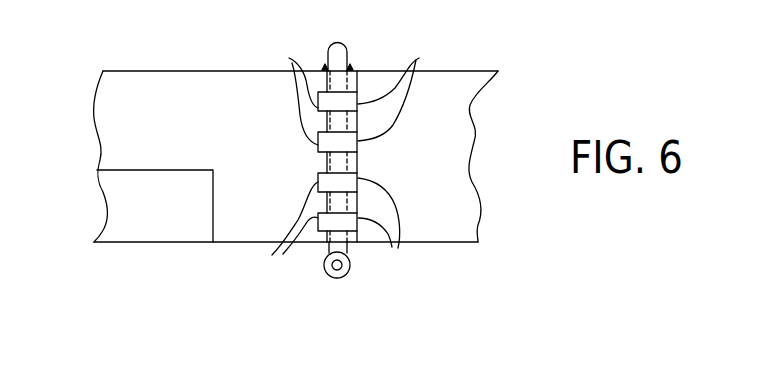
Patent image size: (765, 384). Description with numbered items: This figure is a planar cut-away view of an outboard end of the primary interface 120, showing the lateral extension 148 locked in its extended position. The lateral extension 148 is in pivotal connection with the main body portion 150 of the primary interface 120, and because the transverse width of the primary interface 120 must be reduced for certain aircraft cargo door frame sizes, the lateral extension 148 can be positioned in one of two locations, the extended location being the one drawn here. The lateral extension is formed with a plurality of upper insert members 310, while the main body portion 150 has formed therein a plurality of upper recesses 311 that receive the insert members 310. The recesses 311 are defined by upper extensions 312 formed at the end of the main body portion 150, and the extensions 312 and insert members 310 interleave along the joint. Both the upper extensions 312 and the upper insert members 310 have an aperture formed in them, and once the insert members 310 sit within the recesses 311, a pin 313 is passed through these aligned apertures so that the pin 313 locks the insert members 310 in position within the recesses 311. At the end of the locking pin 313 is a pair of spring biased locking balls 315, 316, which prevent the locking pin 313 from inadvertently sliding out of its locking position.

The primary interface 120 is at (97, 215).
The lateral extension 148 is at (460, 228).
The main body portion 150 is at (197, 137).
The upper insert members 310 is at (410, 159).
The upper recesses 311 is at (274, 161).
The upper extensions 312 is at (360, 164).
The pin 313 is at (325, 248).
The spring biased locking ball 315 is at (324, 66).
The spring biased locking ball 316 is at (351, 65).